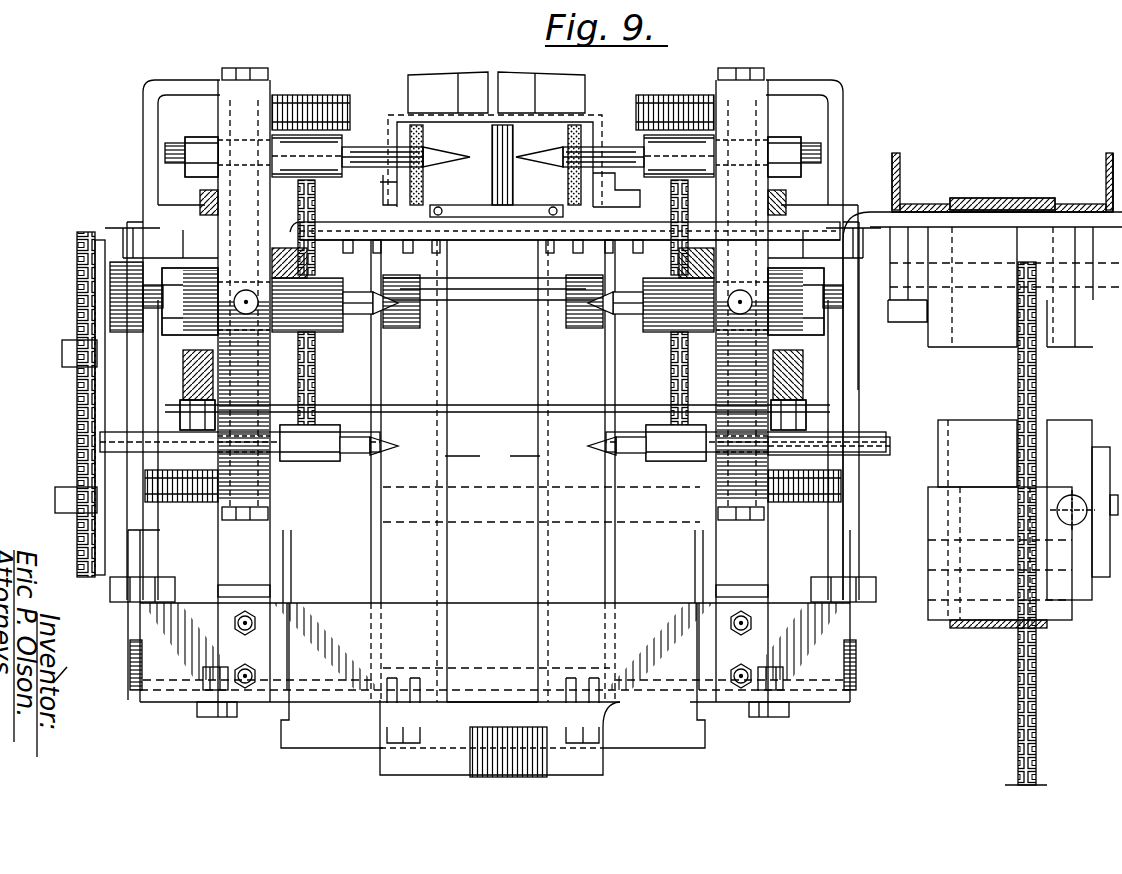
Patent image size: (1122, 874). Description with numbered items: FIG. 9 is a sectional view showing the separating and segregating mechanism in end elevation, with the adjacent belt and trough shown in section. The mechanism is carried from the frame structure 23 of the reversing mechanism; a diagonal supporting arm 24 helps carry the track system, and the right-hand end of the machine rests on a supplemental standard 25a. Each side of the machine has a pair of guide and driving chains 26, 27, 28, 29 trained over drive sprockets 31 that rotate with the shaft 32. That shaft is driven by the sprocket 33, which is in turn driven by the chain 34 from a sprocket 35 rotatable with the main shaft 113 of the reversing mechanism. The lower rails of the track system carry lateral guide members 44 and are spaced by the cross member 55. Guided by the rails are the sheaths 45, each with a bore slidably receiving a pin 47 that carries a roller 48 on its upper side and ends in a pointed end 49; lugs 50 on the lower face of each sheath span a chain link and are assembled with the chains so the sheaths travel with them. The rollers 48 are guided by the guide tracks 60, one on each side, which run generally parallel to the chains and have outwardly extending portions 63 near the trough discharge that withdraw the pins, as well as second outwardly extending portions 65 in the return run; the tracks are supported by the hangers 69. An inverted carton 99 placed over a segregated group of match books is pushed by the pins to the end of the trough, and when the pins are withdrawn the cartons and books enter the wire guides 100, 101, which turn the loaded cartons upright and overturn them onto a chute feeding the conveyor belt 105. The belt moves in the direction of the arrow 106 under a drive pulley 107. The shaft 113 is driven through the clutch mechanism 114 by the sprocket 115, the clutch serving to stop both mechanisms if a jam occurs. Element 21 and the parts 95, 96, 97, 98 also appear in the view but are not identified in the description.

The drive chain 21 is at (1037, 768).
The frame structure 23 is at (302, 732).
The supporting arm 24 is at (492, 456).
The supplemental standard 25a is at (602, 762).
The guide and driving chain 26 is at (210, 200).
The guide and driving chain 27 is at (318, 215).
The guide and driving chain 28 is at (580, 215).
The guide and driving chain 29 is at (765, 215).
The drive sprocket 31 is at (306, 262).
The shaft 32 is at (508, 302).
The sprocket 33 is at (118, 282).
The chain 34 is at (75, 410).
The sprocket 35 is at (75, 540).
The lateral guide member 44 is at (180, 418).
The sheath 45 is at (195, 143).
The pin 47 is at (168, 152).
The roller 48 is at (340, 135).
The pointed end 49 is at (522, 152).
The lug 50 is at (785, 198).
The cross member 55 is at (498, 405).
The guide track 60 is at (245, 95).
The outwardly extending portion 63 is at (296, 128).
The second outwardly extending portion 65 is at (190, 502).
The hanger 69 is at (158, 80).
The bracket 95 is at (600, 188).
The bracket 96 is at (383, 186).
The plate 97 is at (541, 92).
The plate 98 is at (448, 92).
The carton 99 is at (395, 118).
The wire guide 100 is at (550, 217).
The wire guide 101 is at (441, 217).
The conveyor belt 105 is at (1000, 198).
The arrow 106 is at (1112, 152).
The drive pulley 107 is at (1062, 346).
The shaft 113 is at (505, 522).
The clutch mechanism 114 is at (1070, 423).
The sprocket 115 is at (990, 423).